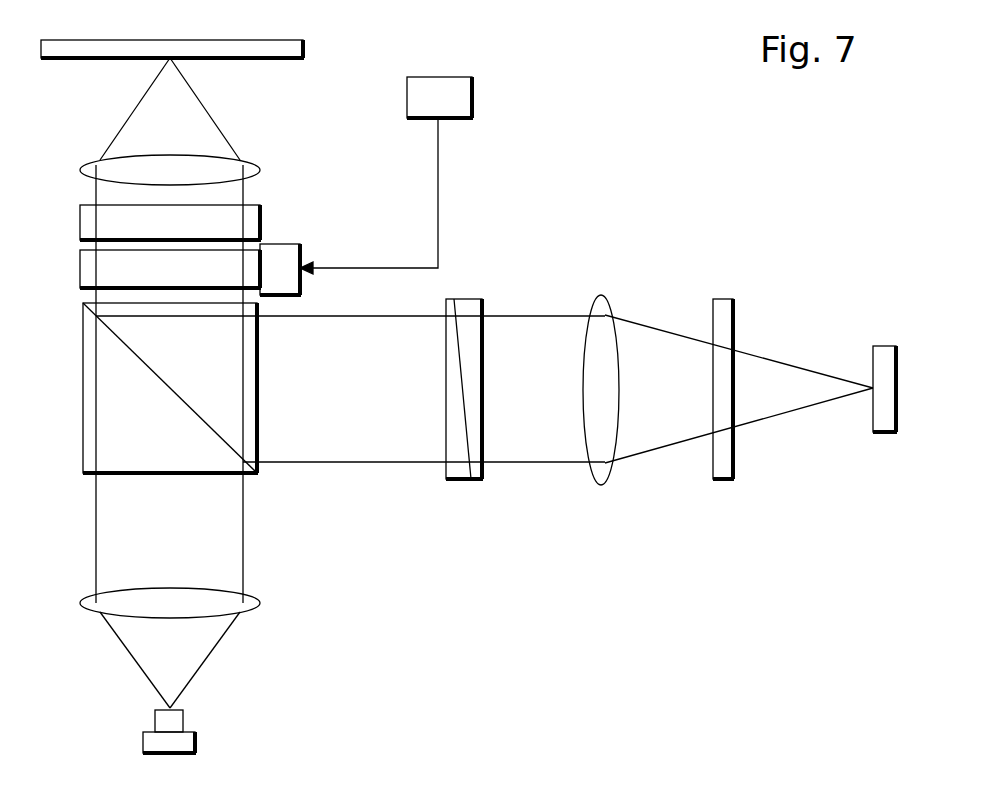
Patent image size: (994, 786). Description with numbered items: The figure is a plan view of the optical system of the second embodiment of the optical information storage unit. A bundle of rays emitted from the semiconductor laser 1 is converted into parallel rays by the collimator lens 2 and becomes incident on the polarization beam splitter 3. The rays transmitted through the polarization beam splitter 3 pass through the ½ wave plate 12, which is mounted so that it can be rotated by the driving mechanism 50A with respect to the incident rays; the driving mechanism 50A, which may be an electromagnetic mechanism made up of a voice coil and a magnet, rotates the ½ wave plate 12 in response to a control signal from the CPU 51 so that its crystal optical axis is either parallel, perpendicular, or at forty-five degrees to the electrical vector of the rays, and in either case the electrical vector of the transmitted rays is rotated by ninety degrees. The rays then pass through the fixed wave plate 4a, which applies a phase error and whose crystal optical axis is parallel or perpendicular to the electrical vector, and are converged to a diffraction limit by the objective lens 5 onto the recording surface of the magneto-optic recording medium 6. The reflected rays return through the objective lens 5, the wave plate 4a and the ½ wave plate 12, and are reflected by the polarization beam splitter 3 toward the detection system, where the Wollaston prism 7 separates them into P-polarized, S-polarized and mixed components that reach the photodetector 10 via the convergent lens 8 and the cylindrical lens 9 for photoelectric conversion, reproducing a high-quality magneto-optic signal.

The semiconductor laser 1 is at (190, 742).
The collimator lens 2 is at (248, 607).
The polarization beam splitter 3 is at (83, 415).
The wave plate 4a is at (80, 222).
The objective lens 5 is at (258, 173).
The magneto-optic recording medium 6 is at (303, 48).
The Wollaston prism 7 is at (456, 300).
The convergent lens 8 is at (598, 452).
The cylindrical lens 9 is at (721, 472).
The photodetector 10 is at (881, 346).
The ½ wave plate 12 is at (80, 270).
The driving mechanism 50A is at (300, 248).
The CPU 51 is at (472, 83).